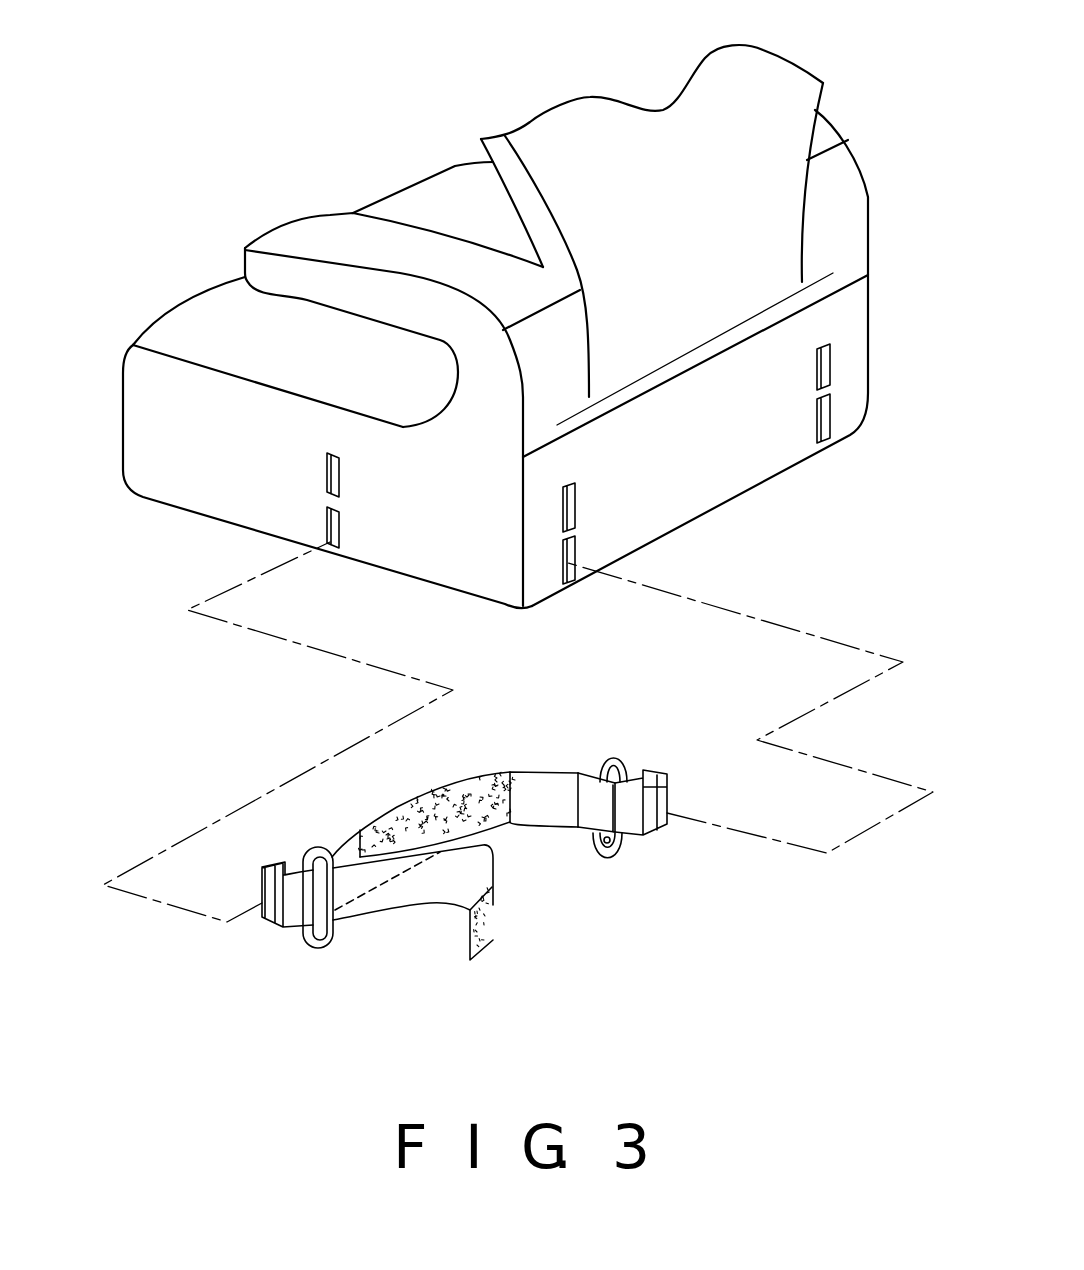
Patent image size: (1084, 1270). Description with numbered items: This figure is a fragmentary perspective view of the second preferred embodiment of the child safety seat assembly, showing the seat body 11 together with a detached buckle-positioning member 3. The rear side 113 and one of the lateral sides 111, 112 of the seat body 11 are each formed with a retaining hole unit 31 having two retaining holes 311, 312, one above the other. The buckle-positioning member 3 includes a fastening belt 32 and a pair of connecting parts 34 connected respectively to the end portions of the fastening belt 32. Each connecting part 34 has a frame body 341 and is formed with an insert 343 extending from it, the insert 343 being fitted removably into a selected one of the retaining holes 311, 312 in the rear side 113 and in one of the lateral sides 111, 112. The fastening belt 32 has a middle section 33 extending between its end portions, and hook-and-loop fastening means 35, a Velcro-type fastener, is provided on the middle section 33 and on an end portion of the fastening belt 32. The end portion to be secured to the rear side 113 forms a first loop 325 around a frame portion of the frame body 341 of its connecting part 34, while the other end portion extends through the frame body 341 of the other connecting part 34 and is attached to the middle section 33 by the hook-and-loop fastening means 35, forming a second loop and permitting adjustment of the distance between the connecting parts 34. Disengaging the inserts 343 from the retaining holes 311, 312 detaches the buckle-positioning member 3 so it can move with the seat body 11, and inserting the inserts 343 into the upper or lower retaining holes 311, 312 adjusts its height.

The seat body 11 is at (492, 326).
The lateral side 111 is at (173, 447).
The lateral side 112 is at (873, 347).
The rear side 113 is at (725, 452).
The buckle-positioning member 3 is at (246, 718).
The retaining hole unit 31 is at (586, 506).
The retaining hole 311 is at (327, 474).
The retaining hole 312 is at (327, 540).
The fastening belt 32 is at (497, 847).
The first loop 325 is at (595, 797).
The middle section 33 is at (550, 783).
The connecting part 34 is at (494, 911).
The frame body 341 is at (320, 930).
The insert 343 is at (275, 870).
The hook-and-loop fastening means 35 is at (470, 800).